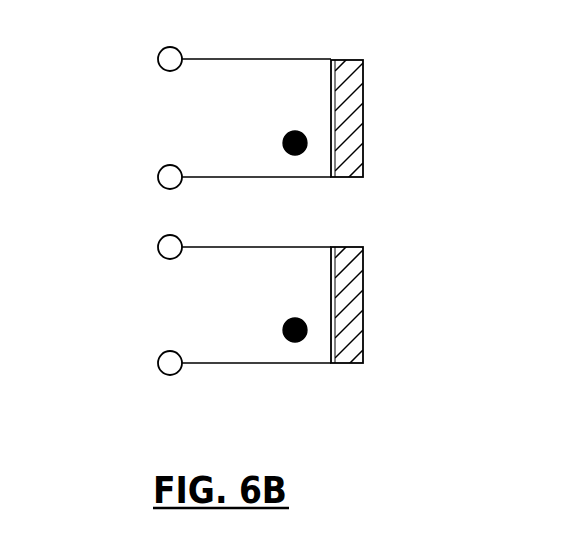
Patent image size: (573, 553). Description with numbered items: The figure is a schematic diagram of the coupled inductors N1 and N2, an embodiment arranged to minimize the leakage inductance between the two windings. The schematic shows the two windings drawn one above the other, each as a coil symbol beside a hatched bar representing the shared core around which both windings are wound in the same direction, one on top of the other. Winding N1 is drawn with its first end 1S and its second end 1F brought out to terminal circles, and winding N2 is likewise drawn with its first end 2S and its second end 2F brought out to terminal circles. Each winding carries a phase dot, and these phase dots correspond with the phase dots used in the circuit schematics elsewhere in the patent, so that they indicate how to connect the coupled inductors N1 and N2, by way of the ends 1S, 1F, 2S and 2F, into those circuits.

The coupled inductor winding N1 is at (270, 247).
The coupled inductor winding N2 is at (268, 59).
The second end of winding N1 1F is at (137, 247).
The first end of winding N1 1S is at (137, 364).
The second end of winding N2 2F is at (137, 58).
The first end of winding N2 2S is at (137, 177).